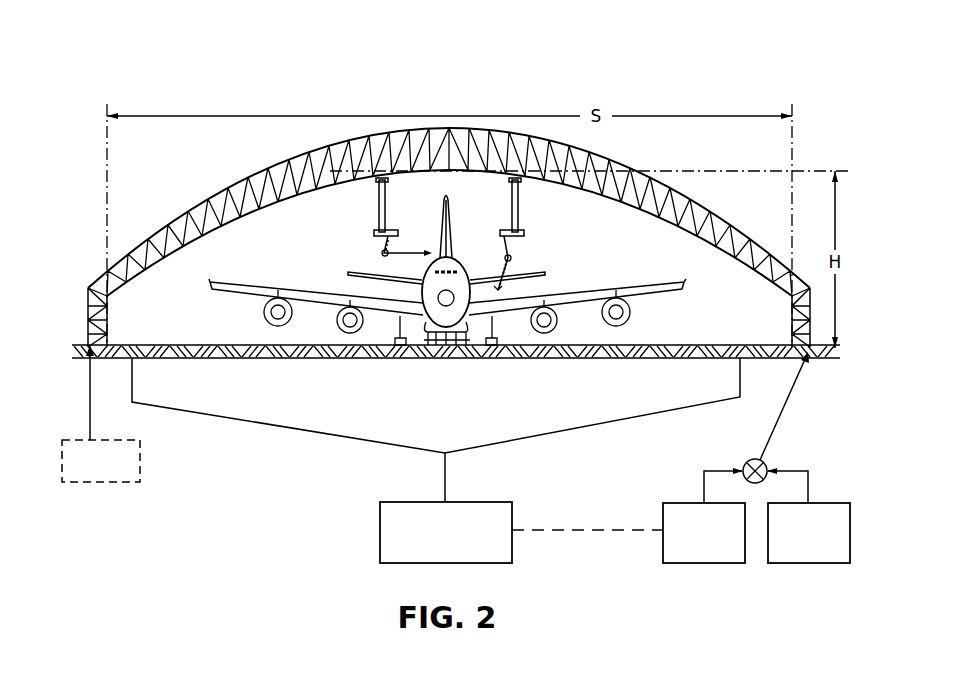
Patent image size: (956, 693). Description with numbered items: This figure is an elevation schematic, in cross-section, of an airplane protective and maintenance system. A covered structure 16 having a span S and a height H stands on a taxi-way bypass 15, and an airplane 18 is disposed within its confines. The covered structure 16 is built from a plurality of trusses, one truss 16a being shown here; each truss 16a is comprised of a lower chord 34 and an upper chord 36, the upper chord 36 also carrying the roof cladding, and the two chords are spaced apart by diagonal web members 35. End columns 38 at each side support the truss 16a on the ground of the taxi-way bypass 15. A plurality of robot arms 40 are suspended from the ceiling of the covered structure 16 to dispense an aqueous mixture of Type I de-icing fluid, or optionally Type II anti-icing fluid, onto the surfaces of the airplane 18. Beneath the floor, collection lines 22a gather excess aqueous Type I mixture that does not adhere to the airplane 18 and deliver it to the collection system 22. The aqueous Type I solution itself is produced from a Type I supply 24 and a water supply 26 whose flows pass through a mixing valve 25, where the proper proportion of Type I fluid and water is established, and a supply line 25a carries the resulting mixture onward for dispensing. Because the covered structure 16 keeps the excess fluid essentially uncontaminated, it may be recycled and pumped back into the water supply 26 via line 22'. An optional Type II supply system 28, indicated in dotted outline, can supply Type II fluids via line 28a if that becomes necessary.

The taxi-way bypass 15 is at (148, 340).
The covered structure 16 is at (462, 181).
The truss 16a is at (622, 162).
The airplane 18 is at (472, 254).
The collection system 22 is at (408, 508).
The collection lines 22a is at (252, 416).
The line 22' is at (587, 505).
The Type I supply 24 is at (805, 564).
The mixing valve 25 is at (768, 464).
The supply line 25a is at (786, 404).
The water supply 26 is at (712, 564).
The Type II supply system 28 is at (140, 463).
The line 28a is at (90, 392).
The lower chord 34 is at (300, 192).
The diagonal web members 35 is at (350, 136).
The upper chord 36 is at (258, 166).
The end columns 38 is at (88, 318).
The robot arms 40 is at (381, 203).